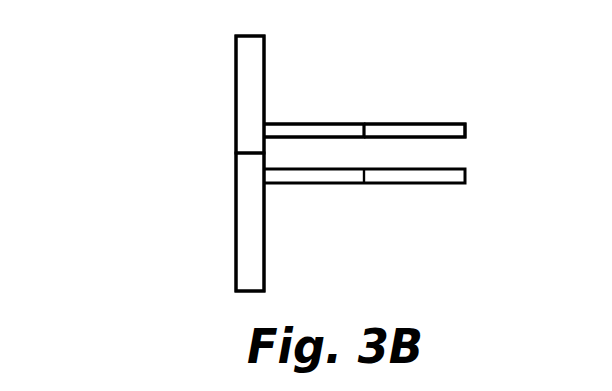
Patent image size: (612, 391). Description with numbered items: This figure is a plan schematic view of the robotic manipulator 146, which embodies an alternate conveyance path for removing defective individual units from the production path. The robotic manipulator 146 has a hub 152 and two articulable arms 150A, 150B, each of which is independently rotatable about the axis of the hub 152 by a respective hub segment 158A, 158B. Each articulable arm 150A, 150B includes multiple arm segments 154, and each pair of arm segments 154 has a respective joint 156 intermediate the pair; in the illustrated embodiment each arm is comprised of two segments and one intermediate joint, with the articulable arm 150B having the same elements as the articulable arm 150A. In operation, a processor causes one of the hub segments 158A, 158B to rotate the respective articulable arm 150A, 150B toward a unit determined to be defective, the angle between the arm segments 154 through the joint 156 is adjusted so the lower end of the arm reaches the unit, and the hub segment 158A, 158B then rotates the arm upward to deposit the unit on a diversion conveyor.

The robotic manipulator 146 is at (121, 103).
The hub 152 is at (266, 58).
The arm segments 154 is at (309, 124).
The joint 156 is at (367, 124).
The hub segment 158A is at (236, 68).
The hub segment 158B is at (236, 264).
The articulable arm 150A is at (386, 59).
The articulable arm 150B is at (392, 233).